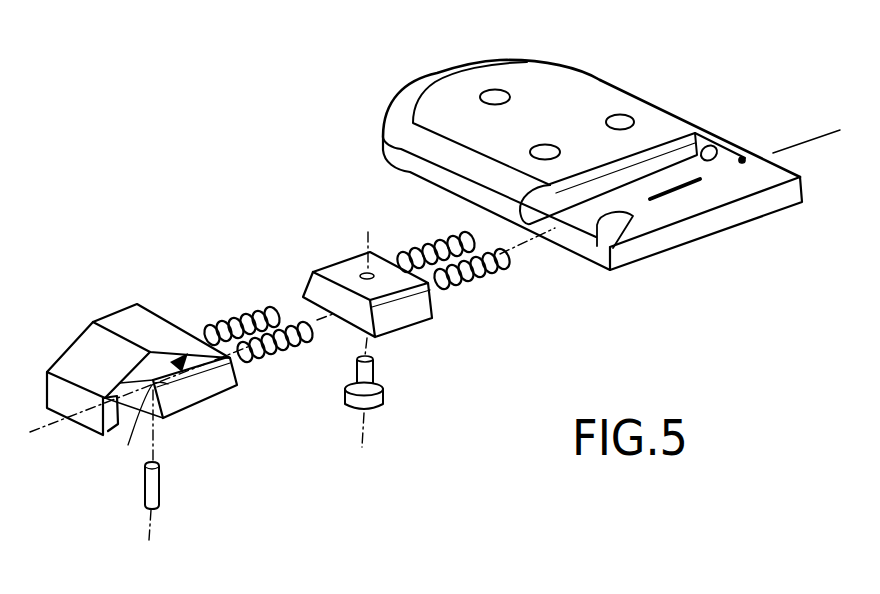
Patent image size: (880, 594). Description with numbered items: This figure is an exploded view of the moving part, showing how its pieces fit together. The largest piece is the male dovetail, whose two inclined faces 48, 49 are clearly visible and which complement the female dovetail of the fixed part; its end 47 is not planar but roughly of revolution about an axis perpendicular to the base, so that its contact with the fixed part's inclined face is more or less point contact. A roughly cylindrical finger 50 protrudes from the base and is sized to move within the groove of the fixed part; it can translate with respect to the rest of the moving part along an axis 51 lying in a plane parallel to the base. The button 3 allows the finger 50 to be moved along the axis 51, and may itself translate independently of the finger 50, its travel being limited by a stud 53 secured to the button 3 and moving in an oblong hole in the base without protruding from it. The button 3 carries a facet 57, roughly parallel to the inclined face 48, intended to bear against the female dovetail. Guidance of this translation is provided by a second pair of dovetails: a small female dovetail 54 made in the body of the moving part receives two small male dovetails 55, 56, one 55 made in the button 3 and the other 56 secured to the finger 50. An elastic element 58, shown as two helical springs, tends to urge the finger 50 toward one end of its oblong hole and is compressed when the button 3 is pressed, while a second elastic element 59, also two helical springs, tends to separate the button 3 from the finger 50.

The button 3 is at (116, 316).
The end of the male dovetail 47 is at (420, 80).
The inclined face 48 is at (441, 155).
The inclined face 49 is at (670, 118).
The finger 50 is at (386, 393).
The axis 51 is at (807, 141).
The stud 53 is at (160, 490).
The small female dovetail 54 is at (623, 191).
The small male dovetail 55 is at (207, 384).
The small male dovetail 56 is at (410, 307).
The facet 57 is at (137, 426).
The elastic element 58 is at (420, 252).
The second elastic element 59 is at (243, 314).